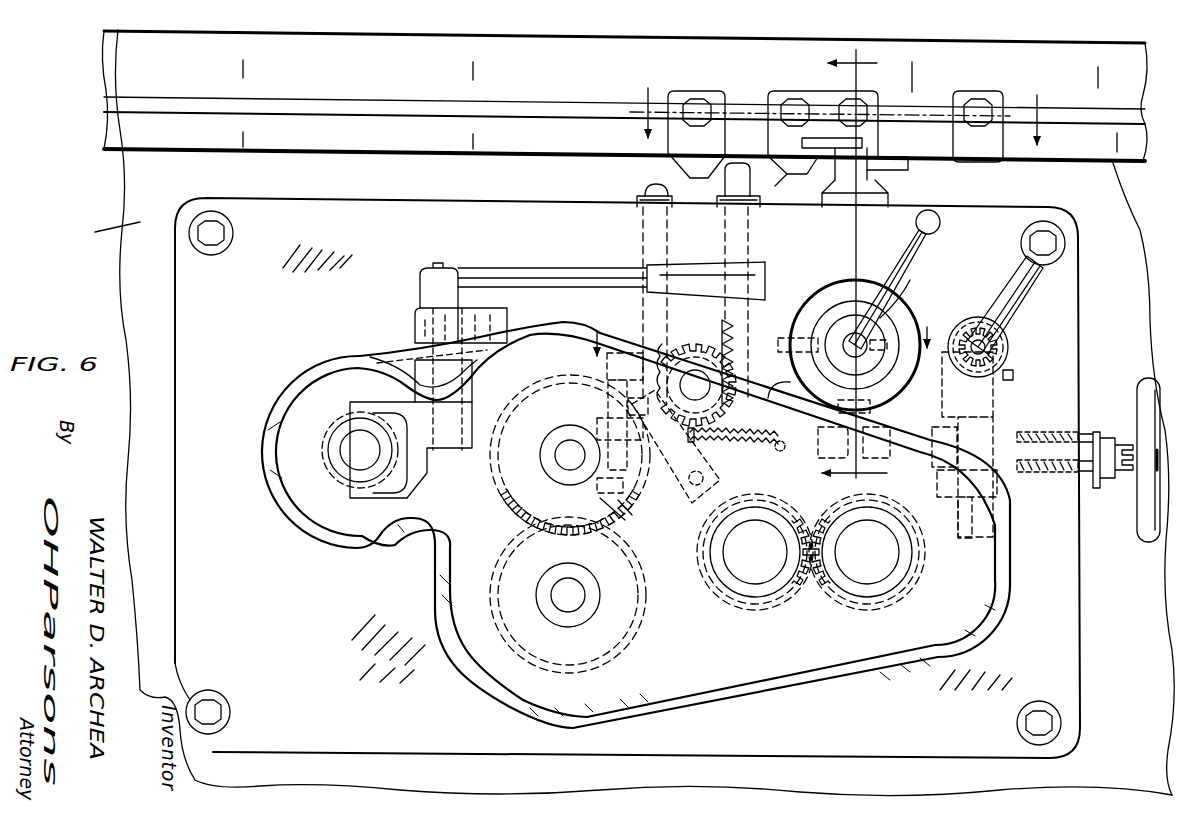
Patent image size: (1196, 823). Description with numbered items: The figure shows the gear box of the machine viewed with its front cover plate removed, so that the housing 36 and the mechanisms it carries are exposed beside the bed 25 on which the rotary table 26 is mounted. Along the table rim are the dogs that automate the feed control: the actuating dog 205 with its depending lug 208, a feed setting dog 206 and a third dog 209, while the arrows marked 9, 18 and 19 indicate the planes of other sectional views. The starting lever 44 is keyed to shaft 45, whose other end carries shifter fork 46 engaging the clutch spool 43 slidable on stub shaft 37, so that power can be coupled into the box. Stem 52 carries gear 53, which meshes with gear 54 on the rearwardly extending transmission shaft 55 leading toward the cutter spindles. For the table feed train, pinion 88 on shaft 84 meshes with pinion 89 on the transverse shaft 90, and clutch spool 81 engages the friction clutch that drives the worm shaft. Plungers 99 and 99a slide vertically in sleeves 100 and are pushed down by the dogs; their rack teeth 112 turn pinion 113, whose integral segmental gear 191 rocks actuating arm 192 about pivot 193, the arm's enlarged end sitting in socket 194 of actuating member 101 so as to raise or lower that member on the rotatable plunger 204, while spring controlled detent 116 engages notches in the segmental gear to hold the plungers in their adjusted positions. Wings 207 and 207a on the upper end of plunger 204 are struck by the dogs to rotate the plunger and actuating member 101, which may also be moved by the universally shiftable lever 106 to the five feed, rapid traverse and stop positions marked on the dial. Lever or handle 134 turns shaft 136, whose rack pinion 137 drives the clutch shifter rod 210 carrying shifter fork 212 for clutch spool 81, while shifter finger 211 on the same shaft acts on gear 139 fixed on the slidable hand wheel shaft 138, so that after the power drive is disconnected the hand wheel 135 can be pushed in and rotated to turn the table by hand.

The bed 25 is at (99, 235).
The table 26 is at (312, 140).
The housing 36 is at (508, 198).
The section line 19 is at (843, 105).
The third dog 209 is at (674, 90).
The actuating dog 205 is at (814, 86).
The section line 9 is at (863, 267).
The feed setting dog 206 is at (1004, 98).
The wing 207 is at (872, 142).
The wing 207a is at (895, 170).
The depending lug 208 is at (778, 180).
The plunger 99 is at (648, 186).
The sleeves 100 is at (640, 198).
The plunger 99a is at (745, 192).
The rotatable plunger 204 is at (870, 240).
The manually shiftable lever 106 is at (908, 270).
The actuating member 101 is at (874, 341).
The lever or handle 134 is at (1015, 282).
The shaft 136 is at (990, 346).
The rack pinion 137 is at (1000, 360).
The clutch shifter rod 210 is at (1013, 375).
The section line 18 is at (762, 339).
The rack teeth 112 is at (664, 340).
The segmental gear 191 is at (718, 360).
The actuating arm 192 is at (778, 348).
The pivot 193 is at (780, 396).
The socket 194 is at (870, 420).
The shifter finger 211 is at (950, 404).
The pinion 113 is at (712, 400).
The shaft 45 is at (440, 266).
The starting lever 44 is at (562, 268).
The stem 52 is at (556, 430).
The shifter fork 212 is at (604, 418).
The clutch spool 43 is at (340, 428).
The stub shaft 37 is at (360, 450).
The shifter fork 46 is at (416, 474).
The gear 53 is at (516, 494).
The spring controlled detent 116 is at (658, 480).
The clutch spool 81 is at (618, 502).
The transmission shaft 55 is at (580, 595).
The gear 54 is at (605, 630).
The shaft 90 is at (757, 560).
The pinion 89 is at (768, 602).
The shaft 84 is at (867, 552).
The pinion 88 is at (893, 588).
The gear 139 is at (963, 500).
The hand wheel shaft 138 is at (1145, 470).
The hand wheel 135 is at (1143, 534).